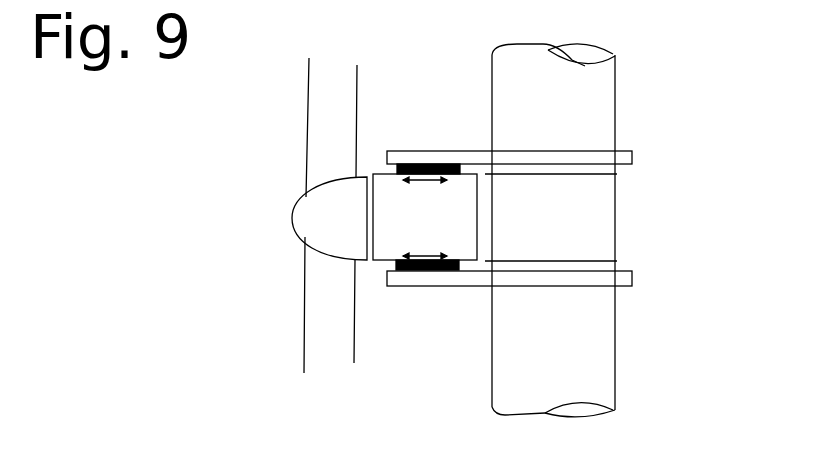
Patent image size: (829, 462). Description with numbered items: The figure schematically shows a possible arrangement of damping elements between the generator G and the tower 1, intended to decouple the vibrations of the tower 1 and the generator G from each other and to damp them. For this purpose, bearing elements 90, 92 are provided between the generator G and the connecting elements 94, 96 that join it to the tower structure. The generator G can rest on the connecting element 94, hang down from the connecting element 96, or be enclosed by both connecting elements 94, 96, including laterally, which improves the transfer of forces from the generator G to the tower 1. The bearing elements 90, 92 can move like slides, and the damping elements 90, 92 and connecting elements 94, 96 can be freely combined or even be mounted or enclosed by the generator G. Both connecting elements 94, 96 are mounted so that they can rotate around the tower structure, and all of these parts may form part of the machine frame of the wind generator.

The tower 1 is at (595, 85).
The bearing element 90 is at (424, 268).
The bearing element 92 is at (428, 167).
The connecting element 94 is at (632, 282).
The connecting element 96 is at (632, 160).
The generator G is at (276, 197).